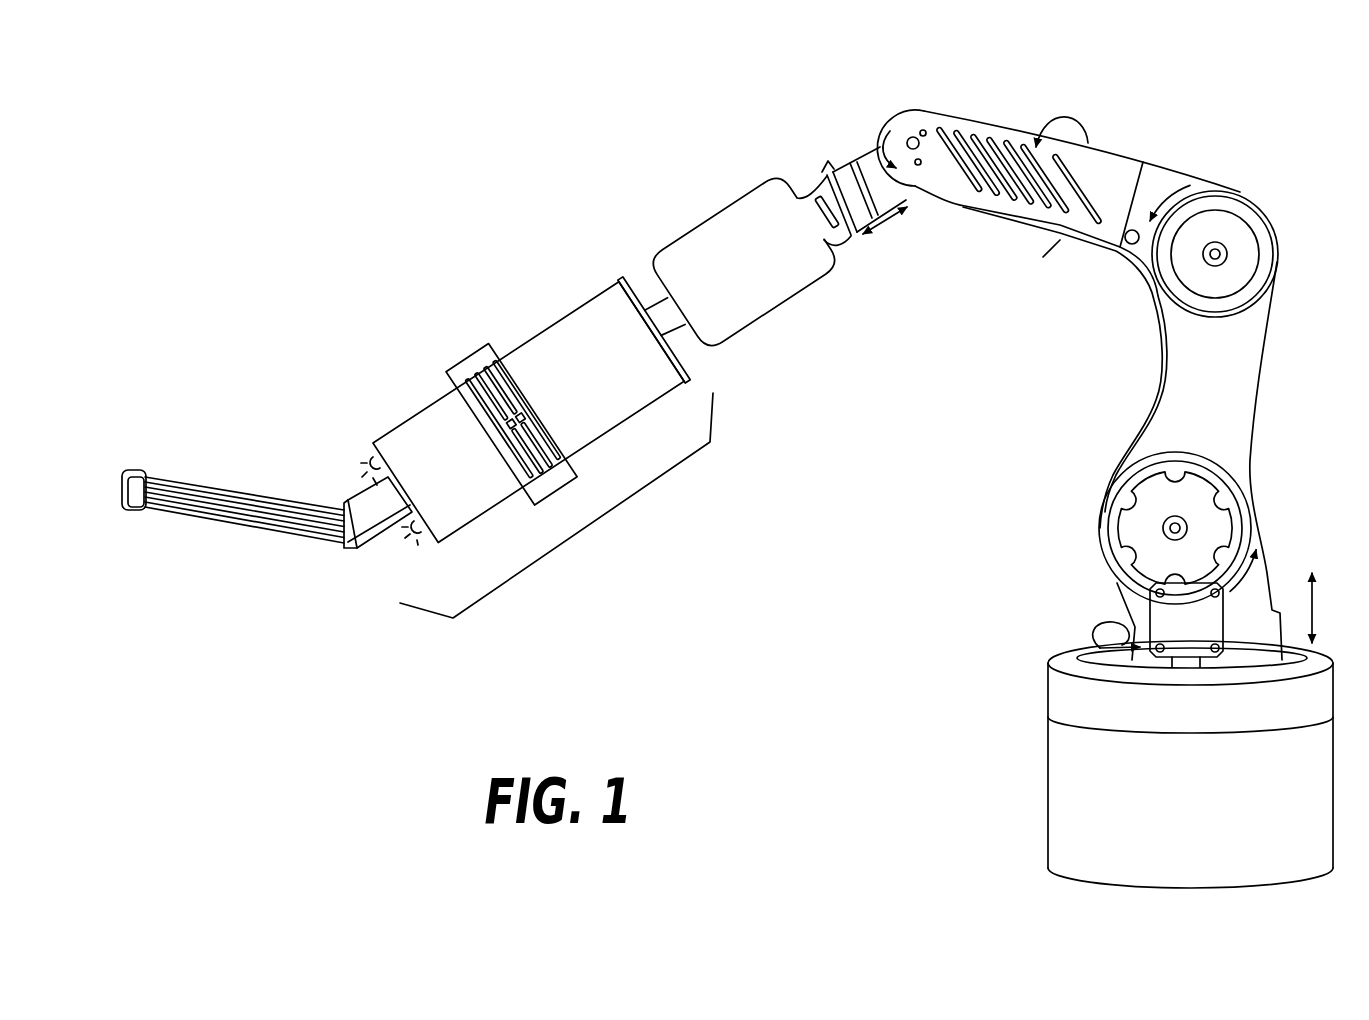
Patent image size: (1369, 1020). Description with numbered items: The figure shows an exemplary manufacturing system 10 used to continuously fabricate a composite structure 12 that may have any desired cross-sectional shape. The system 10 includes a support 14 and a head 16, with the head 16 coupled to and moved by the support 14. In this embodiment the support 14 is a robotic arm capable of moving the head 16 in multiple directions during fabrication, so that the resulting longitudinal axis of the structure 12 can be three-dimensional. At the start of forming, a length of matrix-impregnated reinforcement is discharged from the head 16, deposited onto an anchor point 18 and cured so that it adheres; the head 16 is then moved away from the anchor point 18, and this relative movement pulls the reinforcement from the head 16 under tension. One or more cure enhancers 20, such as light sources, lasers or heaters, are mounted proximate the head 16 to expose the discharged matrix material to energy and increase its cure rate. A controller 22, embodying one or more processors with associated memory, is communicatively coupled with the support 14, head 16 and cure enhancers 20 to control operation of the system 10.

The system 10 is at (336, 129).
The composite structure 12 is at (233, 490).
The support 14 is at (1217, 407).
The head 16 is at (588, 527).
The anchor point 18 is at (140, 510).
The cure enhancer 20 is at (370, 462).
The controller 22 is at (1198, 632).